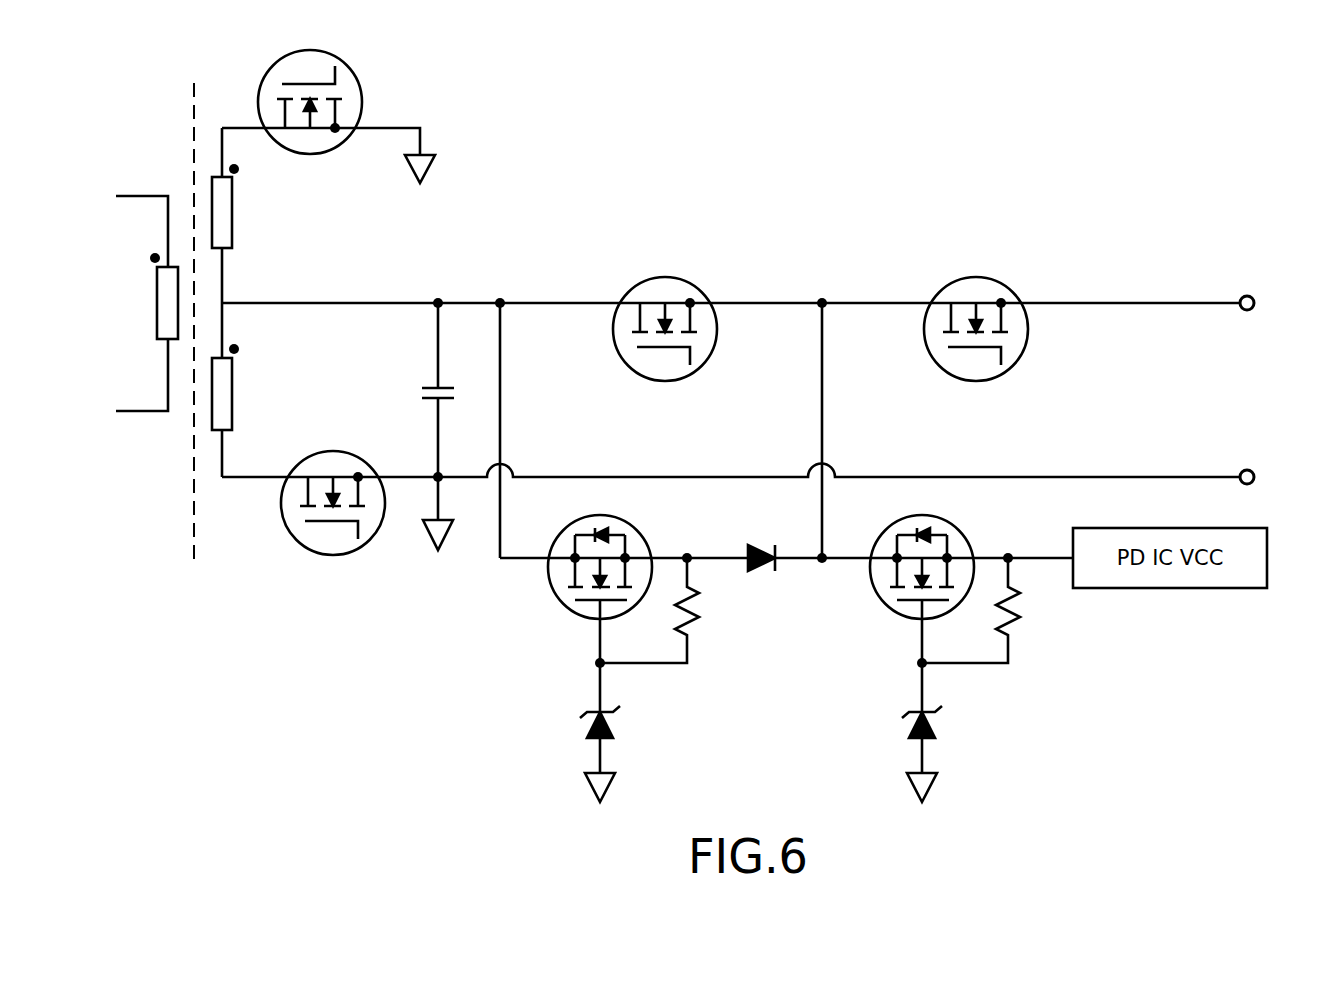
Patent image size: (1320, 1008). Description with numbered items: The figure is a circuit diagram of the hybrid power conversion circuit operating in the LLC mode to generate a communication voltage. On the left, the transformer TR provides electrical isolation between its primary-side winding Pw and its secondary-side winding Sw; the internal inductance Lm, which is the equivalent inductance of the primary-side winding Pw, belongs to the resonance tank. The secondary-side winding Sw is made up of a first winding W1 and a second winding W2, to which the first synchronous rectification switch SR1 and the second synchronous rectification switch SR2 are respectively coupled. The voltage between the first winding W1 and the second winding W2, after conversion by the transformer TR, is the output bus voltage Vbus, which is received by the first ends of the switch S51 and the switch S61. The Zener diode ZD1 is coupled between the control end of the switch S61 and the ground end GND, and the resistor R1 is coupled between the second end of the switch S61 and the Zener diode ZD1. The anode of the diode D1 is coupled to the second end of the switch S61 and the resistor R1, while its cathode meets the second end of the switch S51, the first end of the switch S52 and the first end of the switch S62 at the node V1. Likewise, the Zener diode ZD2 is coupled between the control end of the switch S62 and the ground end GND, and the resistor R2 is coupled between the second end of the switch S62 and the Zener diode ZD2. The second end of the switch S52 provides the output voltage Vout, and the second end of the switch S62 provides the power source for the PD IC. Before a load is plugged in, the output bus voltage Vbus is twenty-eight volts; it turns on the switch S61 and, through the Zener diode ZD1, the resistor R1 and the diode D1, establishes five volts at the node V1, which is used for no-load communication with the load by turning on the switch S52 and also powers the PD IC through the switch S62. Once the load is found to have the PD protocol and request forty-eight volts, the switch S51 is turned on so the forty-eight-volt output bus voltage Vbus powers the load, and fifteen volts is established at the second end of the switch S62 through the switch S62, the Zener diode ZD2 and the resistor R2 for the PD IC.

The transformer TR is at (196, 309).
The primary-side winding Pw is at (132, 182).
The internal inductance Lm is at (150, 296).
The first winding W1 is at (240, 215).
The second winding W2 is at (240, 390).
The secondary-side winding Sw is at (270, 266).
The first synchronous rectification switch SR1 is at (328, 114).
The second synchronous rectification switch SR2 is at (327, 517).
The output bus voltage Vbus is at (430, 289).
The switch S51 is at (669, 321).
The switch S52 is at (990, 321).
The output voltage Vout is at (1275, 305).
The ground end GND is at (1275, 478).
The switch S61 is at (613, 587).
The switch S62 is at (937, 584).
The diode D1 is at (763, 543).
The node V1 is at (839, 546).
The resistor R1 is at (669, 608).
The resistor R2 is at (988, 608).
The Zener diode ZD1 is at (621, 732).
The Zener diode ZD2 is at (943, 732).